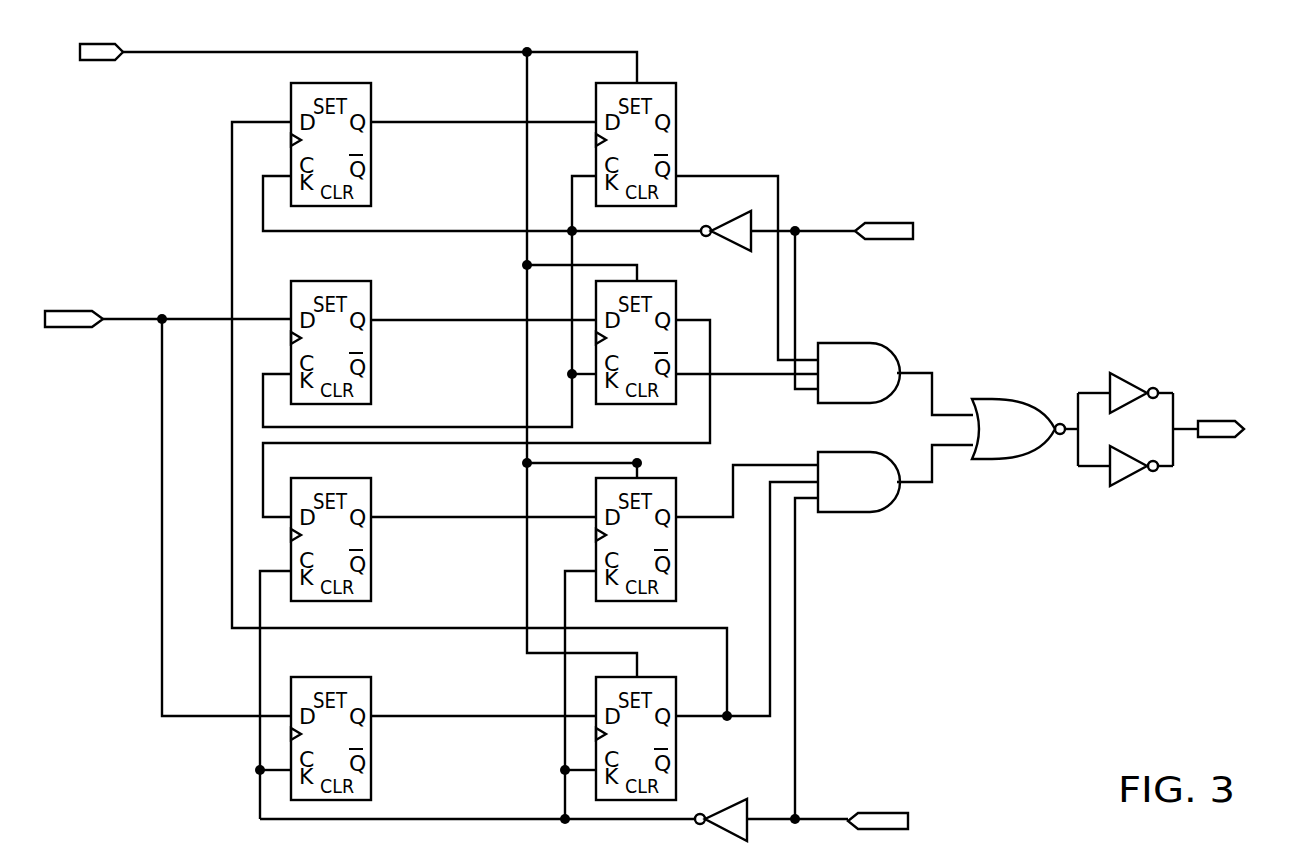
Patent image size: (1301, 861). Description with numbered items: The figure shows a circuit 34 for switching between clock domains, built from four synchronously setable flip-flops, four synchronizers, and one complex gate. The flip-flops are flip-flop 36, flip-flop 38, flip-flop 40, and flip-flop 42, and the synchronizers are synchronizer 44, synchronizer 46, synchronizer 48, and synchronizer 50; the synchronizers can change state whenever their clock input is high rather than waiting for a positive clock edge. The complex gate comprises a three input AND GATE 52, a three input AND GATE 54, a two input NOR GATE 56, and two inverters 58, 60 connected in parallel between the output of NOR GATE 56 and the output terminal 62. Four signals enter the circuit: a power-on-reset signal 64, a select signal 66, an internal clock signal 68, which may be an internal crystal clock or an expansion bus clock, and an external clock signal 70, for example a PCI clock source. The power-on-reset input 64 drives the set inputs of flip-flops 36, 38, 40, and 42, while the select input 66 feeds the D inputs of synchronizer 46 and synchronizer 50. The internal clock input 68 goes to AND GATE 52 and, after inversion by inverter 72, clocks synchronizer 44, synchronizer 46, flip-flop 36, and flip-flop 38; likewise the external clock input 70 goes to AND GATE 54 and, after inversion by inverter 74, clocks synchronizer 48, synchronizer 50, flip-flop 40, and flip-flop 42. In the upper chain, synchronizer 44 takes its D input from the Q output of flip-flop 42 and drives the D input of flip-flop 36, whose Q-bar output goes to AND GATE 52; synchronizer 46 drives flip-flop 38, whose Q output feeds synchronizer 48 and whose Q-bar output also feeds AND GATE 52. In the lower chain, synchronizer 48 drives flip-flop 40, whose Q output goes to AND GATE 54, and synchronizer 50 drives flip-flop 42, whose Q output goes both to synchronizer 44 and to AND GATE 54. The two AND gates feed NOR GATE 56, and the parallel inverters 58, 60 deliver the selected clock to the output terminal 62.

The circuit 34 is at (650, 435).
The flip-flop 36 is at (670, 83).
The flip-flop 38 is at (665, 283).
The flip-flop 40 is at (663, 478).
The flip-flop 42 is at (660, 678).
The synchronizer 44 is at (360, 83).
The synchronizer 46 is at (360, 281).
The synchronizer 48 is at (358, 478).
The synchronizer 50 is at (355, 677).
The three input AND GATE 52 is at (850, 343).
The three input AND GATE 54 is at (850, 512).
The two input NOR GATE 56 is at (1010, 399).
The inverter 58 is at (1125, 373).
The inverter 60 is at (1125, 486).
The output terminal 62 is at (1210, 437).
The power-on-reset signal 64 is at (95, 60).
The select signal 66 is at (72, 327).
The internal clock (int-clk) signal 68 is at (890, 240).
The external clock (ext-clk) signal 70 is at (885, 830).
The inverter 72 is at (735, 251).
The inverter 74 is at (728, 799).